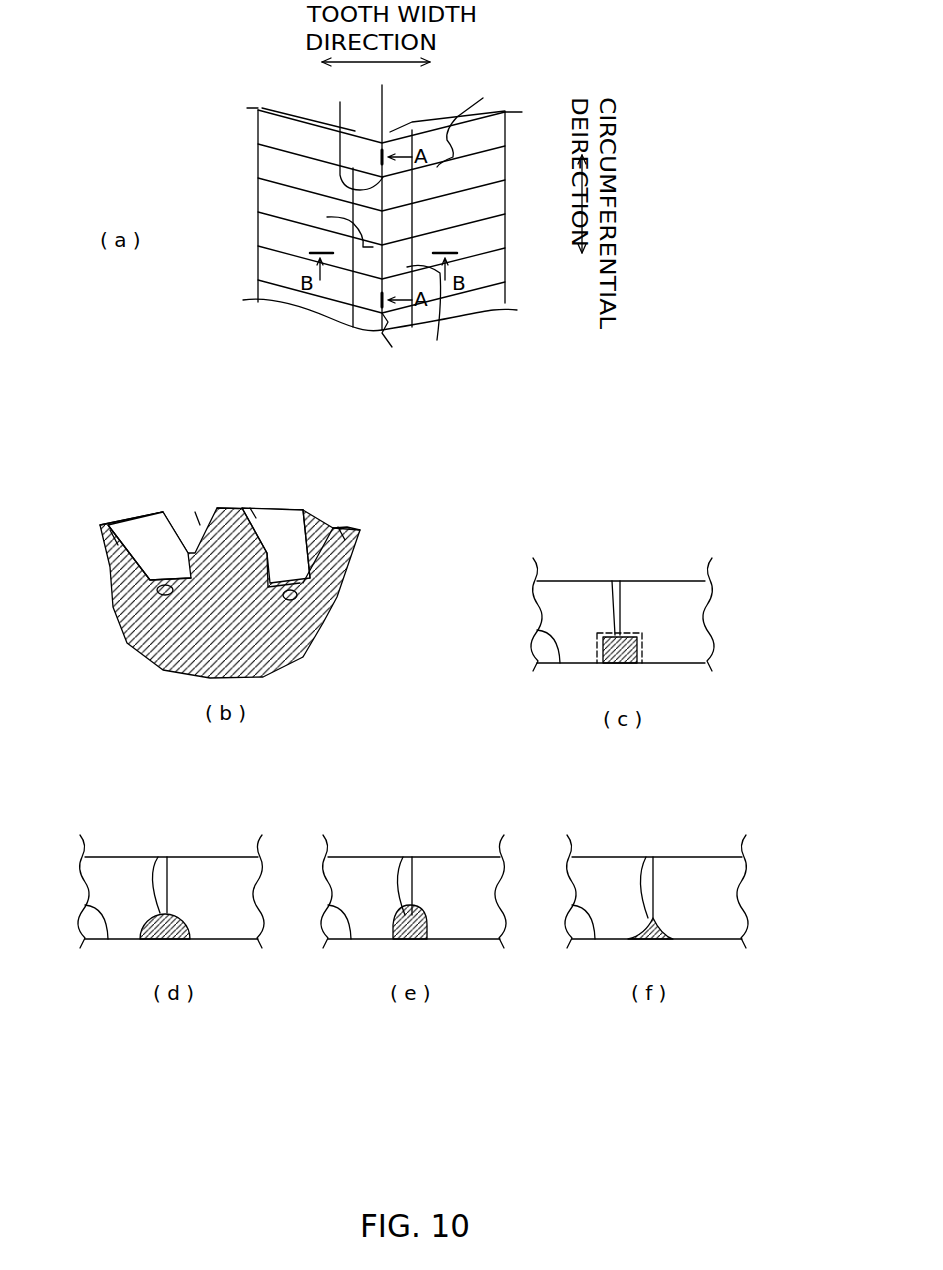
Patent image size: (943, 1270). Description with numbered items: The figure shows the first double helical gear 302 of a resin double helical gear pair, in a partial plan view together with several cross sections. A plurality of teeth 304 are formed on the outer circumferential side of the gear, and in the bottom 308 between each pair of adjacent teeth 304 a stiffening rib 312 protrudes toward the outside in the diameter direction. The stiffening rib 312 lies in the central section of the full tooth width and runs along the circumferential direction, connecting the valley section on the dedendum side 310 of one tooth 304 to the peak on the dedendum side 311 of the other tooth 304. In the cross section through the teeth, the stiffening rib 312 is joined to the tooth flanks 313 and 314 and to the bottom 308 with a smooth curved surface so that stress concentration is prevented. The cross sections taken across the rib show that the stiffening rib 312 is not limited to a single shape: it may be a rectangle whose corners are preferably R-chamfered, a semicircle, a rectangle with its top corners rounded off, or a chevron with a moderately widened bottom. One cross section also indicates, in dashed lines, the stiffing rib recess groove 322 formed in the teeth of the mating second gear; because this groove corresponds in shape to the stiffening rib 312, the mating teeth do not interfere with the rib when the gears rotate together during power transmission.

The first double helical gear 302 is at (255, 120).
The teeth 304 is at (218, 857).
The bottom 308 is at (58, 908).
The valley section on the dedendum side 310 is at (391, 130).
The peak on the dedendum side 311 is at (190, 550).
The stiffening rib 312 is at (166, 857).
The tooth flank 313 is at (126, 520).
The tooth flank 314 is at (199, 512).
The stiffing rib recess groove 322 is at (642, 655).